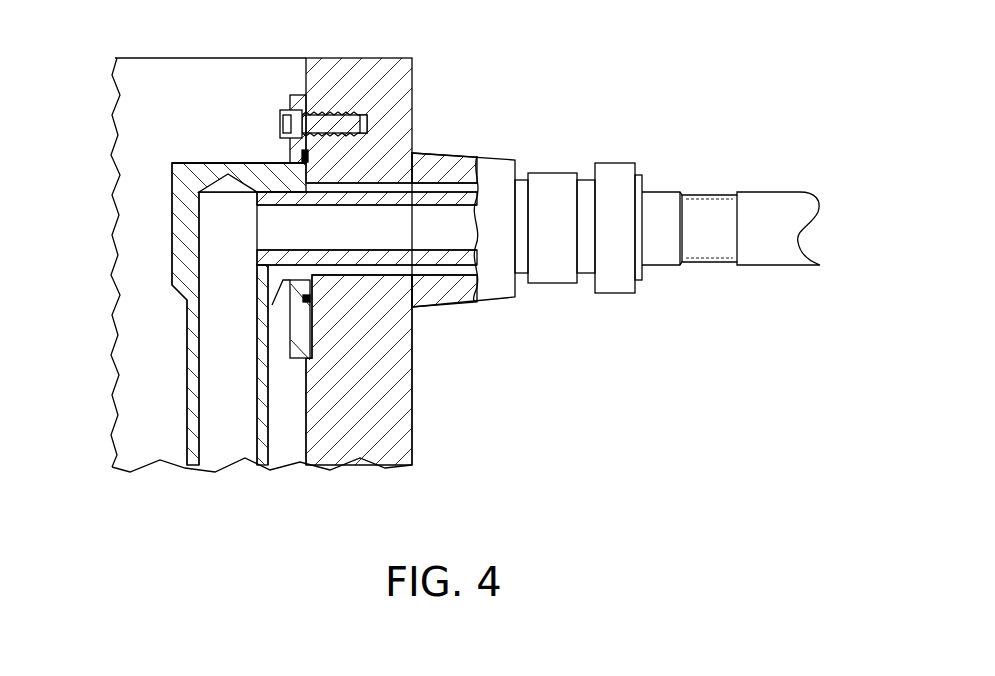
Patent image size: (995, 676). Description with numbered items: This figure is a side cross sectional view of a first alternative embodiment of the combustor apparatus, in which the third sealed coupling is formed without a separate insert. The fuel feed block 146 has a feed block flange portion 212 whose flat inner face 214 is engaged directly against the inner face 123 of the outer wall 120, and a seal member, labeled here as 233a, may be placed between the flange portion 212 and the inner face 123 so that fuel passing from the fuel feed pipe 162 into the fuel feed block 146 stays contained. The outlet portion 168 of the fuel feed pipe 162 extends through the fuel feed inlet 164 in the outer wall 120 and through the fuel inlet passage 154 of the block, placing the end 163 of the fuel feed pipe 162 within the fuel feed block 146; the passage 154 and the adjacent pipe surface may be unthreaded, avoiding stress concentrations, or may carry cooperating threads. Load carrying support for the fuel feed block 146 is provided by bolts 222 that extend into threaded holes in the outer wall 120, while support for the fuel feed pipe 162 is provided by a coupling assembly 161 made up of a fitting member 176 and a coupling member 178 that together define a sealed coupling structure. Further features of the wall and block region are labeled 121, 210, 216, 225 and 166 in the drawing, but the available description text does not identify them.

The outer wall 120 is at (135, 445).
The wall block portion 121 is at (412, 390).
The inner face of the outer wall 123 is at (305, 438).
The fuel feed block 146 is at (160, 181).
The fuel inlet passage 154 is at (283, 192).
The coupling assembly 161 is at (503, 82).
The fuel feed pipe 162 is at (714, 281).
The end of the fuel feed pipe 163 is at (257, 258).
The fuel feed inlet 164 is at (377, 185).
The coupling nut 166 is at (655, 268).
The outlet portion of the fuel feed pipe 168 is at (268, 268).
The fitting member 176 is at (562, 156).
The coupling member 178 is at (490, 162).
The plate 210 is at (187, 253).
The feed block flange portion 212 is at (300, 95).
The inner face of the fuel feed block 214 is at (312, 330).
The sleeve 216 is at (290, 340).
The bolts 222 is at (280, 112).
The barb 225 is at (283, 300).
The seal element 233a is at (310, 298).